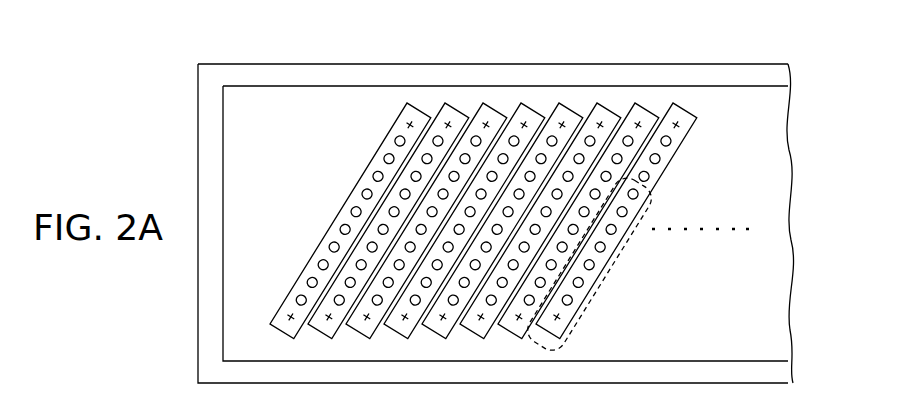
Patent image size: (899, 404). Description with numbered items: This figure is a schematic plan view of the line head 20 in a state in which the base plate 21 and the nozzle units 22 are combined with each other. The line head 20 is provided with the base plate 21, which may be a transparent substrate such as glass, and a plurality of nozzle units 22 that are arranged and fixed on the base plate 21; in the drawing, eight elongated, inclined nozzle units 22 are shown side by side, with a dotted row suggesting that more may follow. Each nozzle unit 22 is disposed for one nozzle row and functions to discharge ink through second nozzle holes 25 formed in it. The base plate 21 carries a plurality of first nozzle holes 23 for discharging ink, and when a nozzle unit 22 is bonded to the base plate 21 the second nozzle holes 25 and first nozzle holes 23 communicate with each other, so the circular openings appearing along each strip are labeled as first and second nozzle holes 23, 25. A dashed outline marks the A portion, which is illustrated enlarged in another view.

The line head 20 is at (766, 50).
The base plate 21 is at (768, 155).
The nozzle unit 22 is at (462, 118).
The first nozzle hole 23 is at (463, 220).
The second nozzle hole 25 is at (366, 194).
The A portion A is at (600, 292).